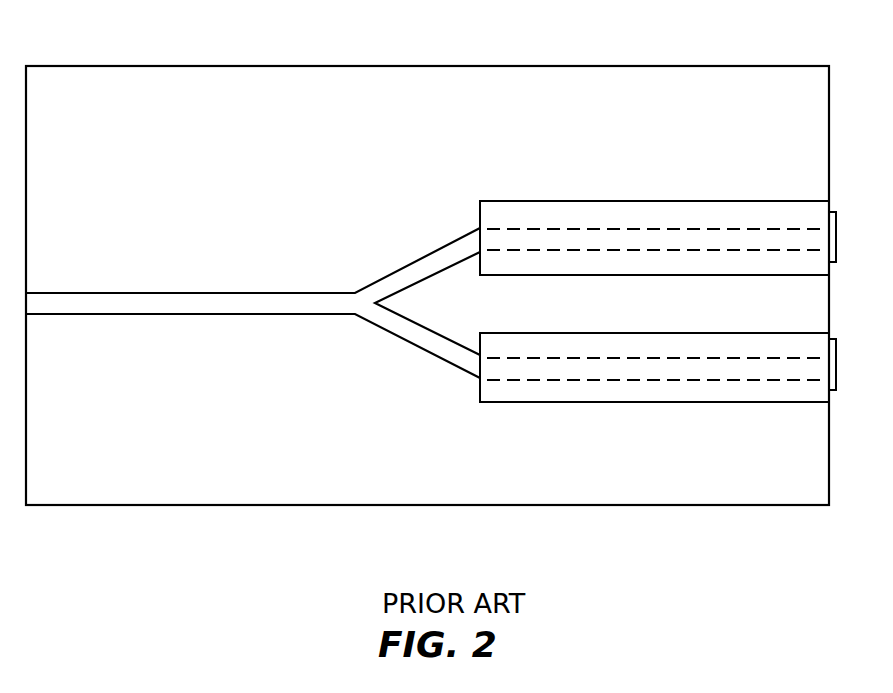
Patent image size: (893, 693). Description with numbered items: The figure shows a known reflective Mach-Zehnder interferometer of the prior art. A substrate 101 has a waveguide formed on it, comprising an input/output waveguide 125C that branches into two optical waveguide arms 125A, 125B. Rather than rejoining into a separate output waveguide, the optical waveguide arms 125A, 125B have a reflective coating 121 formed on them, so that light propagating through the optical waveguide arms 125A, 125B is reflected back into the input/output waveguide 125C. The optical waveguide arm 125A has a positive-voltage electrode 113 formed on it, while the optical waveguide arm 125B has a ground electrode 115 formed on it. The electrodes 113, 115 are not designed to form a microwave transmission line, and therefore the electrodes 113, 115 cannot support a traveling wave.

The substrate 101 is at (192, 85).
The input/output waveguide 125C is at (150, 265).
The positive-voltage electrode 113 is at (520, 213).
The ground electrode 115 is at (527, 392).
The optical waveguide arm 125A is at (622, 242).
The optical waveguide arm 125B is at (688, 367).
The reflective coating 121 is at (836, 247).